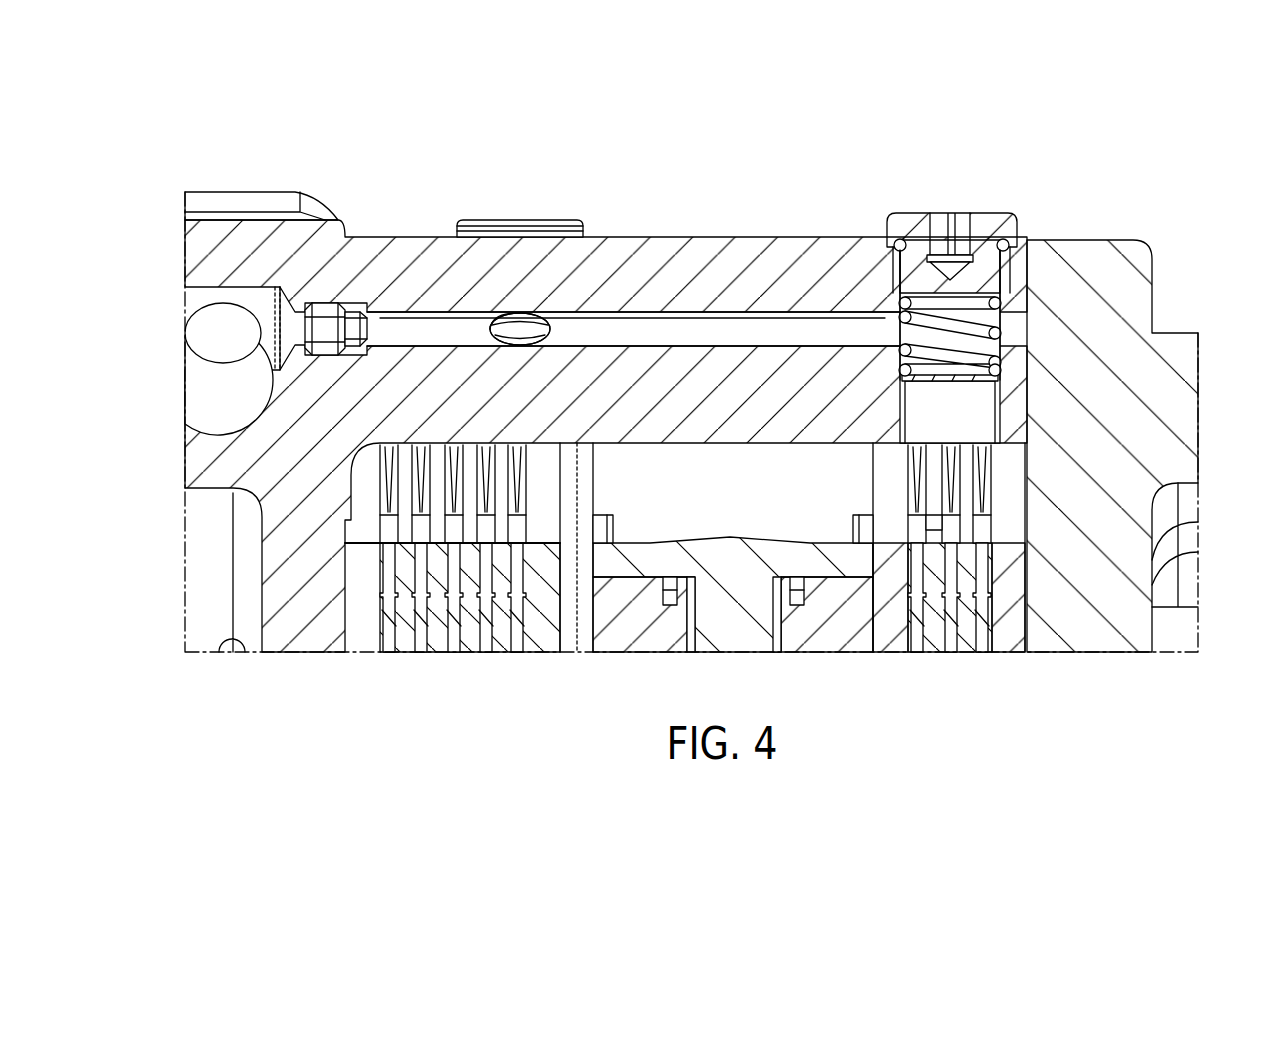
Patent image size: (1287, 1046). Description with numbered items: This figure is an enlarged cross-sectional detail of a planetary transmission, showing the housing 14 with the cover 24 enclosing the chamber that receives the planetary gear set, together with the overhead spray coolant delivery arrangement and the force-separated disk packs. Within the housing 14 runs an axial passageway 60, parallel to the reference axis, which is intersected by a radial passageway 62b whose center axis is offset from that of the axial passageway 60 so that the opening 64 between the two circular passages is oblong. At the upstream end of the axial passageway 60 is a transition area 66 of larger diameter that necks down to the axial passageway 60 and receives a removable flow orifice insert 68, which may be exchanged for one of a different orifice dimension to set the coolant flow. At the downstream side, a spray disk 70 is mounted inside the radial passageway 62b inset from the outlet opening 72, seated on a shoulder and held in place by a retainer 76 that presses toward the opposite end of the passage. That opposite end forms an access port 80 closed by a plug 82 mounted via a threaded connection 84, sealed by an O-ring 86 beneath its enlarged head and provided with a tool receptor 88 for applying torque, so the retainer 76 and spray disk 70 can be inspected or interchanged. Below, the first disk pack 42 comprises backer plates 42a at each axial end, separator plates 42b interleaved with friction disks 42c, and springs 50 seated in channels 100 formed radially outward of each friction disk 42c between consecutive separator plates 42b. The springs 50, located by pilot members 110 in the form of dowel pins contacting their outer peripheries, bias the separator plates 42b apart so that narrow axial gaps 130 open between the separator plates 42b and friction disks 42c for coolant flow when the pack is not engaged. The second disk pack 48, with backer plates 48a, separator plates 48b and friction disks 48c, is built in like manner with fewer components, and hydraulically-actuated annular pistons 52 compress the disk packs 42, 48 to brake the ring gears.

The housing 14 is at (748, 243).
The cover 24 is at (1183, 458).
The first disk pack 42 is at (470, 645).
The backer plates 42a is at (585, 630).
The separator plates 42b is at (535, 632).
The friction disks 42c is at (422, 633).
The second disk pack 48 is at (949, 645).
The backer plates 48a is at (889, 632).
The separator plates 48b is at (932, 632).
The friction disks 48c is at (985, 637).
The springs 50 is at (383, 575).
The annular pistons 52 is at (645, 647).
The axial passageway 60 is at (687, 313).
The radial passageway 62b is at (541, 320).
The opening 64 is at (550, 327).
The transition area 66 is at (325, 305).
The flow orifice insert 68 is at (337, 352).
The spray disk 70 is at (950, 385).
The outlet opening 72 is at (997, 422).
The retainer 76 is at (975, 322).
The access port 80 is at (892, 243).
The plug 82 is at (530, 221).
The threaded connection 84 is at (1005, 277).
The O-ring 86 is at (1010, 250).
The tool receptor 88 is at (960, 218).
The channel 100 is at (388, 548).
The pilot members 110 is at (598, 528).
The axial gaps 130 is at (396, 652).